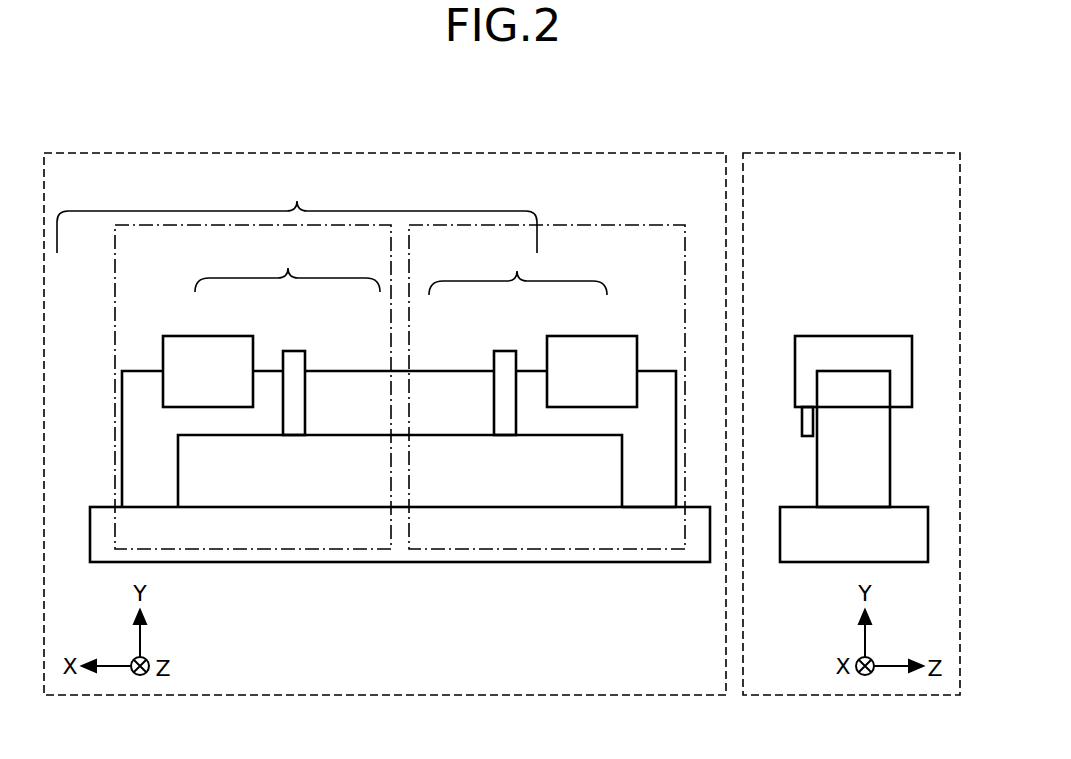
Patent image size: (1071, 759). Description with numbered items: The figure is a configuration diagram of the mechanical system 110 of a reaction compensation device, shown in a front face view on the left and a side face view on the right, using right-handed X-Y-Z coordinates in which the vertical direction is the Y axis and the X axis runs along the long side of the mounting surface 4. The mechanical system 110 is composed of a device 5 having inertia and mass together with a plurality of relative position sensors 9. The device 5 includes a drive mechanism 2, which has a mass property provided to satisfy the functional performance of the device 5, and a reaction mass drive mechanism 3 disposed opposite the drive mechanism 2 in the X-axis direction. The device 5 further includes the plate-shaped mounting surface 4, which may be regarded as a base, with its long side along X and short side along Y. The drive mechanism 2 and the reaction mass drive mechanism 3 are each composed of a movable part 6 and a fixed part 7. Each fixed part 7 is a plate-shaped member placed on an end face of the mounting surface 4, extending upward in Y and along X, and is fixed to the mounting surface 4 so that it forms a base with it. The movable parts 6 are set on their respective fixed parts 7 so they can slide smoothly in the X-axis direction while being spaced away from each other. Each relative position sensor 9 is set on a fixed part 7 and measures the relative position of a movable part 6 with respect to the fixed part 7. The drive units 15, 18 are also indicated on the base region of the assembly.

The mechanical system 110 is at (618, 153).
The device 5 is at (297, 214).
The drive mechanism 2 is at (253, 387).
The reaction mass drive mechanism 3 is at (547, 387).
The movable part 6 is at (205, 352).
The fixed part 7 is at (361, 385).
The relative position sensor 9 is at (294, 422).
The drive unit 15 is at (358, 550).
The drive unit 18 is at (627, 550).
The mounting surface 4 is at (105, 528).